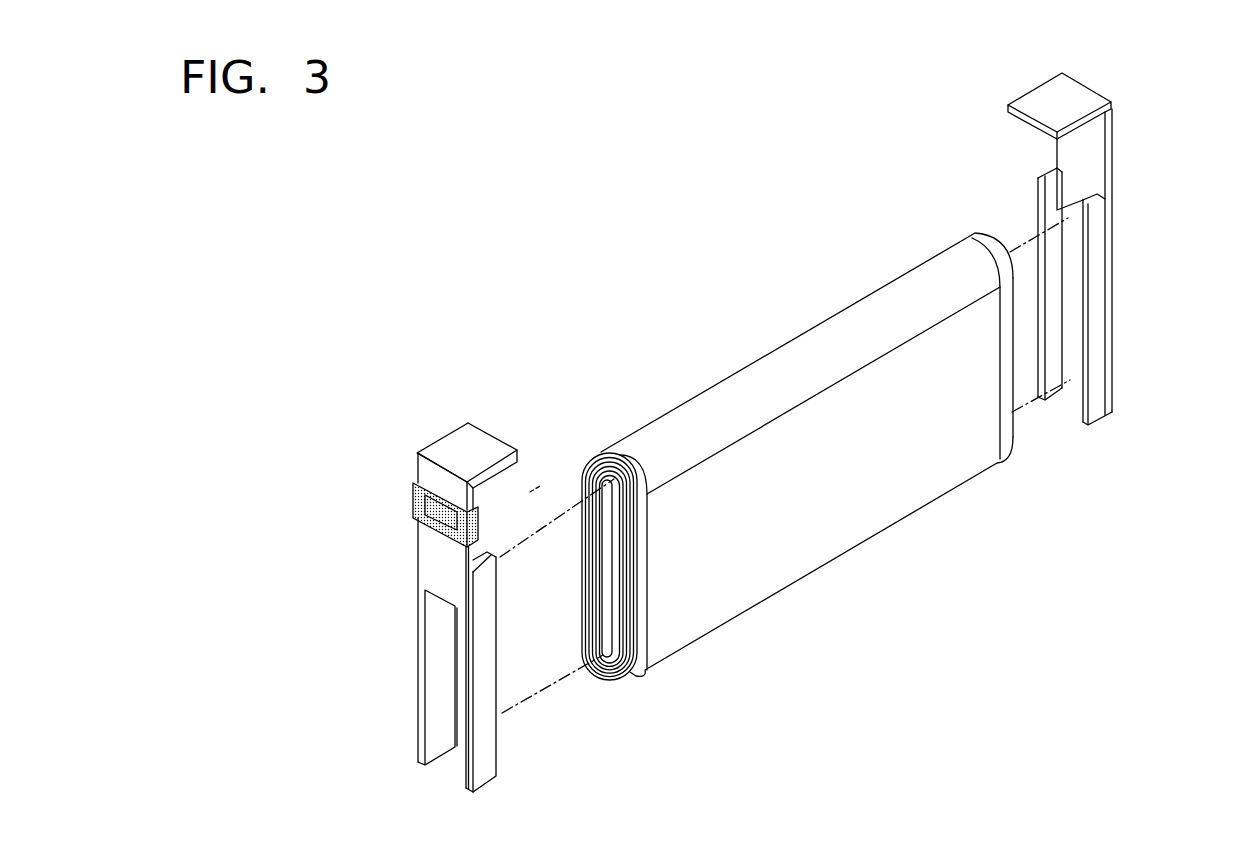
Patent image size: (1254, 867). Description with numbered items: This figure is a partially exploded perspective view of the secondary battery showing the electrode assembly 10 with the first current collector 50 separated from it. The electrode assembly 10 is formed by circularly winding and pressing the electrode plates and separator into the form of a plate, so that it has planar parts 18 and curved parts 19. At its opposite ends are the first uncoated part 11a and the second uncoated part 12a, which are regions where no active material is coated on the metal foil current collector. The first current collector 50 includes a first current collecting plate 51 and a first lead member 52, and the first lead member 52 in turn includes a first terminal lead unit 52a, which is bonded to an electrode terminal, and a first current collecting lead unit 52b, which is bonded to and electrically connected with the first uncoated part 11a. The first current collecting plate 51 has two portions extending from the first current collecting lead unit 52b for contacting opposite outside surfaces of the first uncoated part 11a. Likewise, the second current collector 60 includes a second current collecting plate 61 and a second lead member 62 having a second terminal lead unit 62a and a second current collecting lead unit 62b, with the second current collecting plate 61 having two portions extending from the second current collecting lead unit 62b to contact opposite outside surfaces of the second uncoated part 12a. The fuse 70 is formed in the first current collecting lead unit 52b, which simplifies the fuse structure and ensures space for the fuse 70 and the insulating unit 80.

The electrode assembly 10 is at (820, 495).
The first uncoated part 11a is at (638, 666).
The second uncoated part 12a is at (1006, 459).
The planar parts 18 is at (825, 515).
The curved parts 19 is at (754, 604).
The first current collector 50 is at (397, 607).
The first current collecting plate 51 is at (415, 667).
The first lead member 52 is at (417, 500).
The first terminal lead unit 52a is at (437, 448).
The first current collecting lead unit 52b is at (413, 515).
The second current collector 60 is at (1131, 240).
The second current collecting plate 61 is at (1103, 308).
The second lead member 62 is at (1111, 133).
The second terminal lead unit 62a is at (1080, 93).
The second current collecting lead unit 62b is at (1117, 174).
The fuse 70 is at (472, 507).
The insulating unit 80 is at (478, 536).